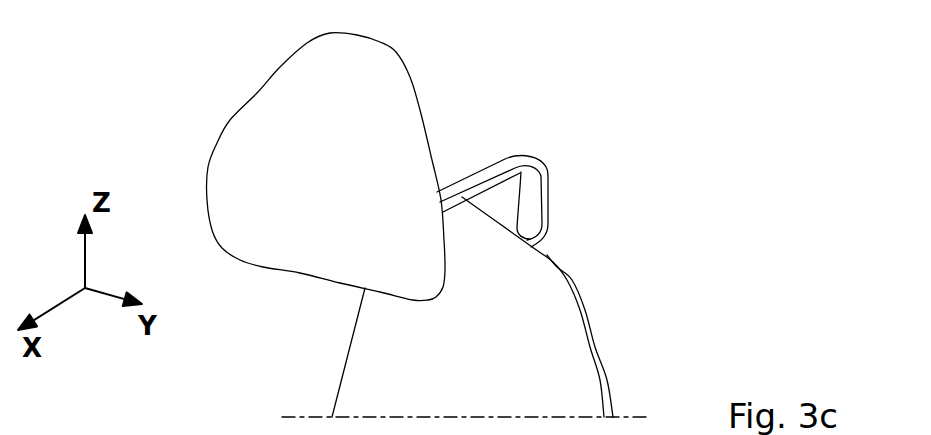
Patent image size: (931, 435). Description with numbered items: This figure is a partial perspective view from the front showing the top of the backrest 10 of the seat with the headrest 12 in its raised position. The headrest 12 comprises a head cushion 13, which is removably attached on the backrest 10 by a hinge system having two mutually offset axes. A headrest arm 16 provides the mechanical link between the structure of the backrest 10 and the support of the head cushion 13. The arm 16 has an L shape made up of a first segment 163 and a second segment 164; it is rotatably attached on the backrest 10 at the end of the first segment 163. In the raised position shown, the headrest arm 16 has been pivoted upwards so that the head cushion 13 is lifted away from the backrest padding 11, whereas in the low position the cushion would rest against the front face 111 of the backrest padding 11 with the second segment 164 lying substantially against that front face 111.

The backrest 10 is at (694, 281).
The backrest padding 11 is at (533, 355).
The front face of the backrest padding 111 is at (384, 352).
The headrest 12 is at (244, 72).
The head cushion 13 is at (248, 167).
The headrest arm 16 is at (563, 170).
The first segment 163 is at (527, 210).
The second segment 164 is at (477, 177).